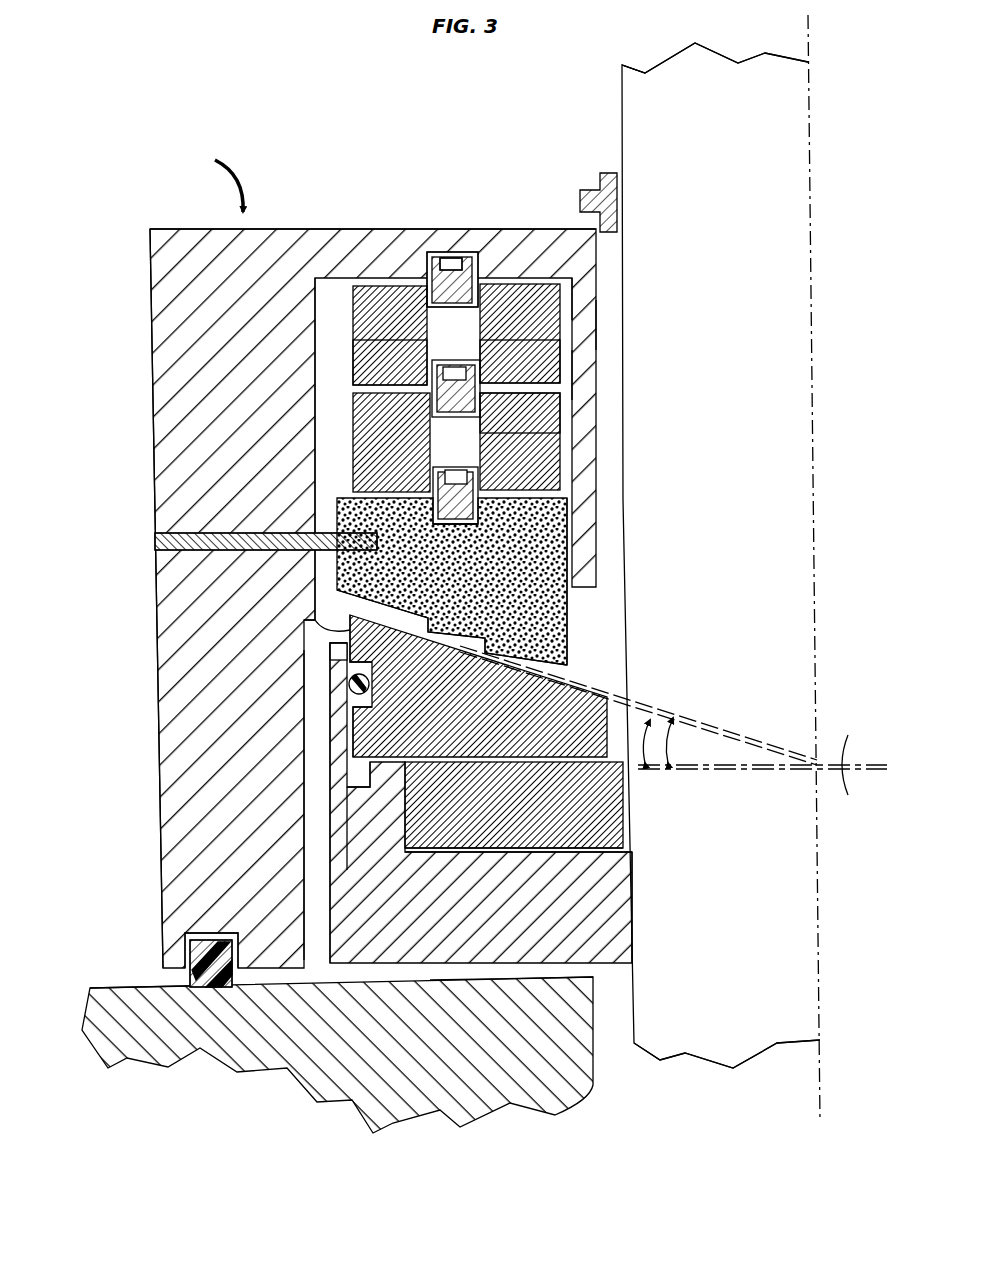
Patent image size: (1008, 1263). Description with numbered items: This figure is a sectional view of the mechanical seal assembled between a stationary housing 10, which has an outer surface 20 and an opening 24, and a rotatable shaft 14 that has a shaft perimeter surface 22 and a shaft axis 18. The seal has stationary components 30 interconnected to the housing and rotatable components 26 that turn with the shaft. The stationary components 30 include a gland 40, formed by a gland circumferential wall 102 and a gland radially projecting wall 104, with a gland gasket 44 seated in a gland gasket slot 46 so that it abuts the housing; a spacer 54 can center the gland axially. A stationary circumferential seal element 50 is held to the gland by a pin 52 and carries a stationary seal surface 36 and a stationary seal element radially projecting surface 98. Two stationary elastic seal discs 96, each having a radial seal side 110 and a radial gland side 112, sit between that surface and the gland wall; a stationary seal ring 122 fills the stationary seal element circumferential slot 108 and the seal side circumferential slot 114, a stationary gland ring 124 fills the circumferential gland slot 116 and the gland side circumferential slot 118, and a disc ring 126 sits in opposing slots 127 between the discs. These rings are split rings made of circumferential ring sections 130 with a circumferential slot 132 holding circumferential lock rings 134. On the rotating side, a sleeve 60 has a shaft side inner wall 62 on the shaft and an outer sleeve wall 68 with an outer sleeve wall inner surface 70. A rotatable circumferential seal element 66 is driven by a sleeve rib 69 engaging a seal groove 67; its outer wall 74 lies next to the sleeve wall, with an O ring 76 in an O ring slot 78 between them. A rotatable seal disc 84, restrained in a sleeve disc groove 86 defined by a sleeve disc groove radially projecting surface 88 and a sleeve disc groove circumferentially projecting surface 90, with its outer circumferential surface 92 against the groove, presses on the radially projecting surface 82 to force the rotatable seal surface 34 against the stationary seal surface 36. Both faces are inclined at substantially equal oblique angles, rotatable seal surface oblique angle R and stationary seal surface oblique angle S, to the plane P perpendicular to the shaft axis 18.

The housing 10 is at (100, 1012).
The shaft 14 is at (644, 148).
The shaft axis 18 is at (812, 118).
The outer surface 20 is at (150, 982).
The shaft perimeter surface 22 is at (622, 80).
The opening 24 is at (600, 1022).
The rotatable components 26 is at (428, 952).
The stationary components 30 is at (215, 180).
The rotatable seal surface 34 is at (478, 686).
The stationary seal surface 36 is at (466, 642).
The gland 40 is at (150, 272).
The gland gasket 44 is at (215, 990).
The gland gasket slot 46 is at (210, 938).
The stationary circumferential seal element 50 is at (560, 620).
The pin 52 is at (155, 562).
The spacer 54 is at (590, 200).
The sleeve 60 is at (472, 985).
The shaft side inner wall 62 is at (632, 945).
The rotatable circumferential seal element 66 is at (625, 705).
The seal groove 67 is at (514, 805).
The outer sleeve wall 68 is at (349, 686).
The sleeve rib 69 is at (330, 810).
The outer sleeve wall inner surface 70 is at (338, 740).
The outer wall 74 is at (314, 622).
The O ring 76 is at (372, 718).
The O ring slot 78 is at (388, 647).
The radially projecting surface 82 is at (380, 800).
The rotatable seal disc 84 is at (503, 856).
The sleeve disc groove 86 is at (462, 856).
The sleeve disc groove radially projecting surface 88 is at (588, 856).
The sleeve disc groove circumferentially projecting surface 90 is at (425, 875).
The outer circumferential surface 92 is at (430, 826).
The stationary elastic seal disc 96 is at (596, 330).
The stationary seal element radially projecting surface 98 is at (320, 480).
The gland circumferential wall 102 is at (160, 395).
The gland radially projecting wall 104 is at (338, 229).
The stationary seal element circumferential slot 108 is at (452, 581).
The radial seal side 110 is at (572, 380).
The radial gland side 112 is at (572, 300).
The seal side circumferential slot 114 is at (520, 441).
The circumferential gland slot 116 is at (428, 270).
The gland side circumferential slot 118 is at (390, 335).
The stationary seal ring 122 is at (470, 537).
The stationary gland ring 124 is at (390, 362).
The disc ring 126 is at (391, 442).
The opposing slots 127 is at (520, 386).
The circumferential ring section 130 is at (520, 333).
The circumferential slot 132 is at (478, 264).
The circumferential lock ring 134 is at (450, 262).
The plane perpendicular to the shaft axis P is at (762, 769).
The rotatable seal surface oblique angle R is at (652, 775).
The stationary seal surface oblique angle S is at (678, 745).